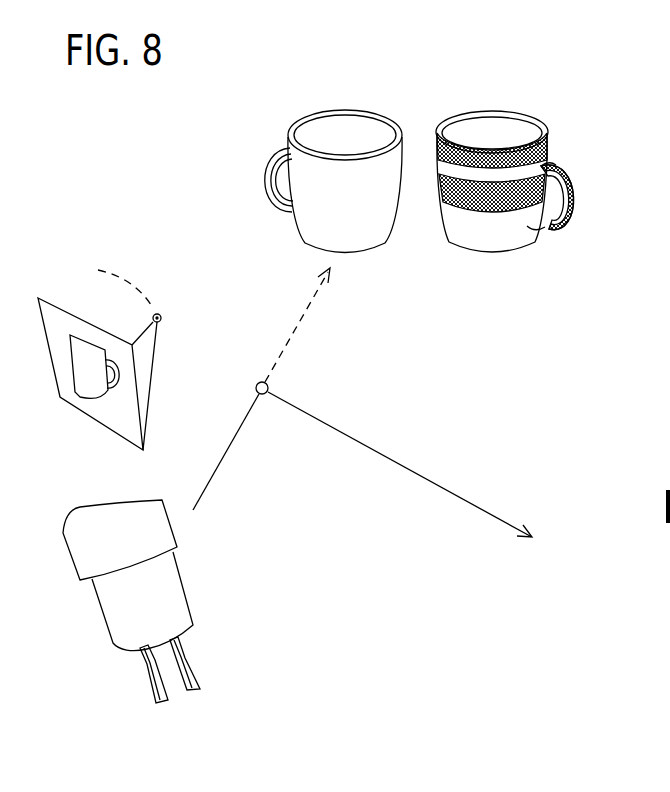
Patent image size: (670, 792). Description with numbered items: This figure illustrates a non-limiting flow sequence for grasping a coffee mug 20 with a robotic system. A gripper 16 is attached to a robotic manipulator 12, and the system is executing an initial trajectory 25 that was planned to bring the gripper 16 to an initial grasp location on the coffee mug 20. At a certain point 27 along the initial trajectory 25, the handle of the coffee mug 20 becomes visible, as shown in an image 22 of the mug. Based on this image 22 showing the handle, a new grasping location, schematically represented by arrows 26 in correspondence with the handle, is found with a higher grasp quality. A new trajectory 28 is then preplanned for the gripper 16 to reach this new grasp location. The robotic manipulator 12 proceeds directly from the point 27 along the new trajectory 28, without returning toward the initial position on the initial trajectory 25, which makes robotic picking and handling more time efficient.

The robotic manipulator 12 is at (153, 595).
The gripper 16 is at (197, 693).
The coffee mug 20 is at (333, 135).
The image 22 is at (93, 370).
The initial trajectory 25 is at (227, 453).
The new grasping location 26 is at (576, 188).
The point along trajectory 27 is at (257, 384).
The new trajectory 28 is at (402, 462).